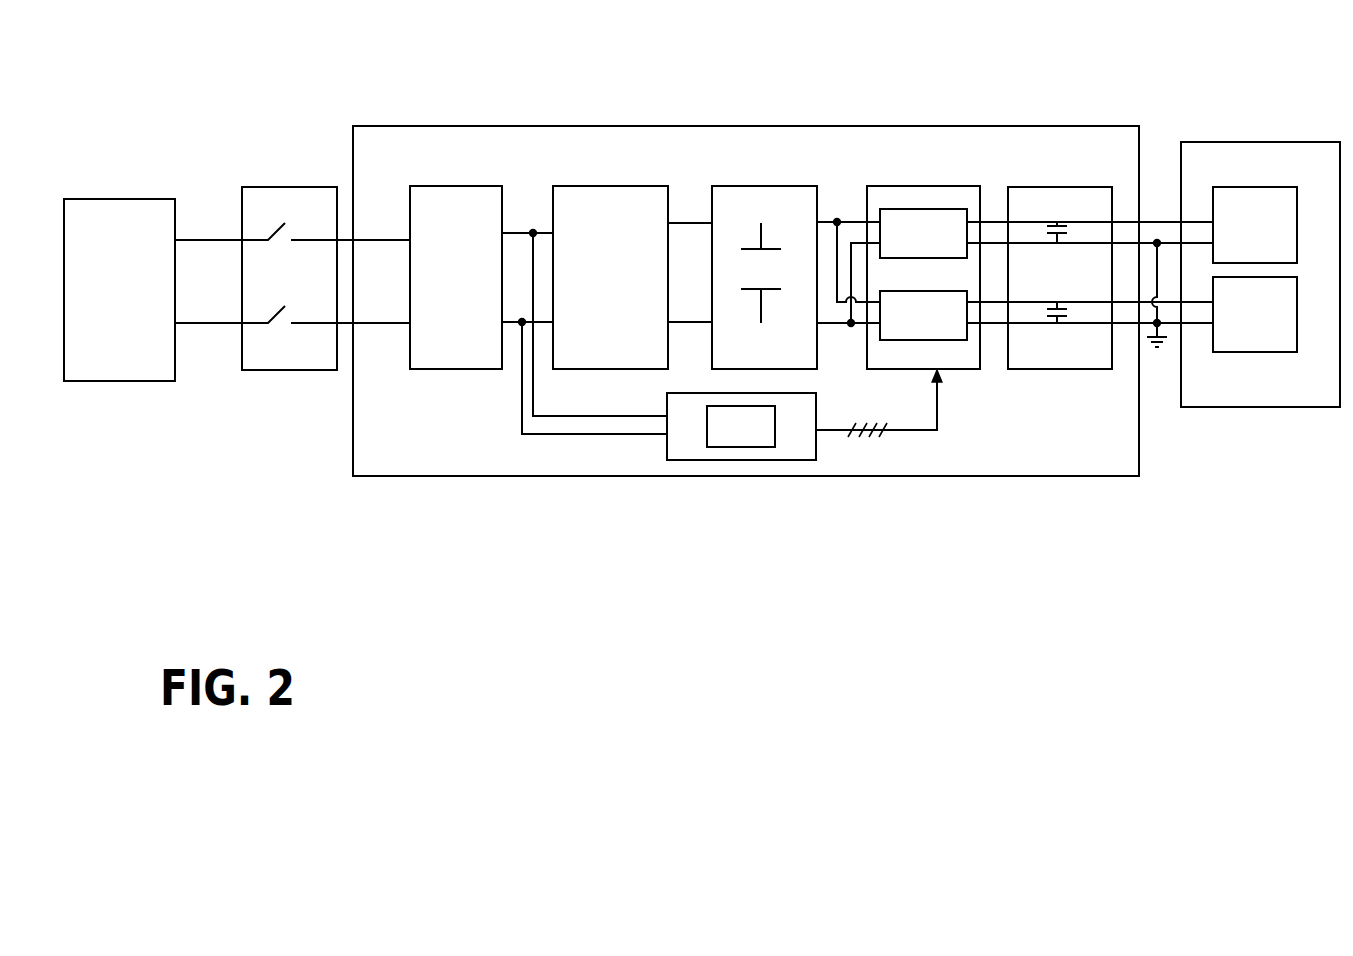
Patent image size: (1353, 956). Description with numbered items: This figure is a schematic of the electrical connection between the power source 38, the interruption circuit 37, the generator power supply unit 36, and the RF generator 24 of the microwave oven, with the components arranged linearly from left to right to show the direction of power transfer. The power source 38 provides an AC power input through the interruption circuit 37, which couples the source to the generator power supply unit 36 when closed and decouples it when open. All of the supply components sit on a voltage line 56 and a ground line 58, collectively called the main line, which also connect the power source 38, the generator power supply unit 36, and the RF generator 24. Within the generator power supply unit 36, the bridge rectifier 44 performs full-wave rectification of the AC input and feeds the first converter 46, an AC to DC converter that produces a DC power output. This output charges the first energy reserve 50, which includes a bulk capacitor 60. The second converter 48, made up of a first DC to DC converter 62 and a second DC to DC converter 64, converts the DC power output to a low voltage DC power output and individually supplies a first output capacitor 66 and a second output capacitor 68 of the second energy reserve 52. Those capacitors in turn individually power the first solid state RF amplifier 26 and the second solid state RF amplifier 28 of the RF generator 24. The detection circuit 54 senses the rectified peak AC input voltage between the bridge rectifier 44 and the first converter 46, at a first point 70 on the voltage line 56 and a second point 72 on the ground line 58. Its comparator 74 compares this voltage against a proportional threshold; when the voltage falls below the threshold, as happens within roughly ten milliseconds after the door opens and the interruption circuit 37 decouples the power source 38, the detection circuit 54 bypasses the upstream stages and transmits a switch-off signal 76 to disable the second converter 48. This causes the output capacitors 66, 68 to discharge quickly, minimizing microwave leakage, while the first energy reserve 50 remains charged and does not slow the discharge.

The RF generator 24 is at (1258, 142).
The first solid state RF amplifier 26 is at (1246, 241).
The second solid state RF amplifier 28 is at (1246, 335).
The generator power supply unit 36 is at (935, 126).
The interruption circuit 37 is at (281, 296).
The power source 38 is at (101, 303).
The bridge rectifier 44 is at (448, 291).
The first converter 46 is at (594, 278).
The second converter 48 is at (957, 186).
The first energy reserve 50 is at (787, 186).
The second energy reserve 52 is at (1082, 187).
The detection circuit 54 is at (742, 460).
The voltage line 56 is at (376, 240).
The ground line 58 is at (390, 323).
The bulk capacitor 60 is at (747, 268).
The first DC to DC converter 62 is at (914, 246).
The second DC to DC converter 64 is at (914, 328).
The first output capacitor 66 is at (1045, 226).
The second output capacitor 68 is at (1045, 315).
The first point 70 is at (533, 233).
The second point 72 is at (522, 322).
The comparator 74 is at (732, 439).
The switch-off signal 76 is at (900, 430).